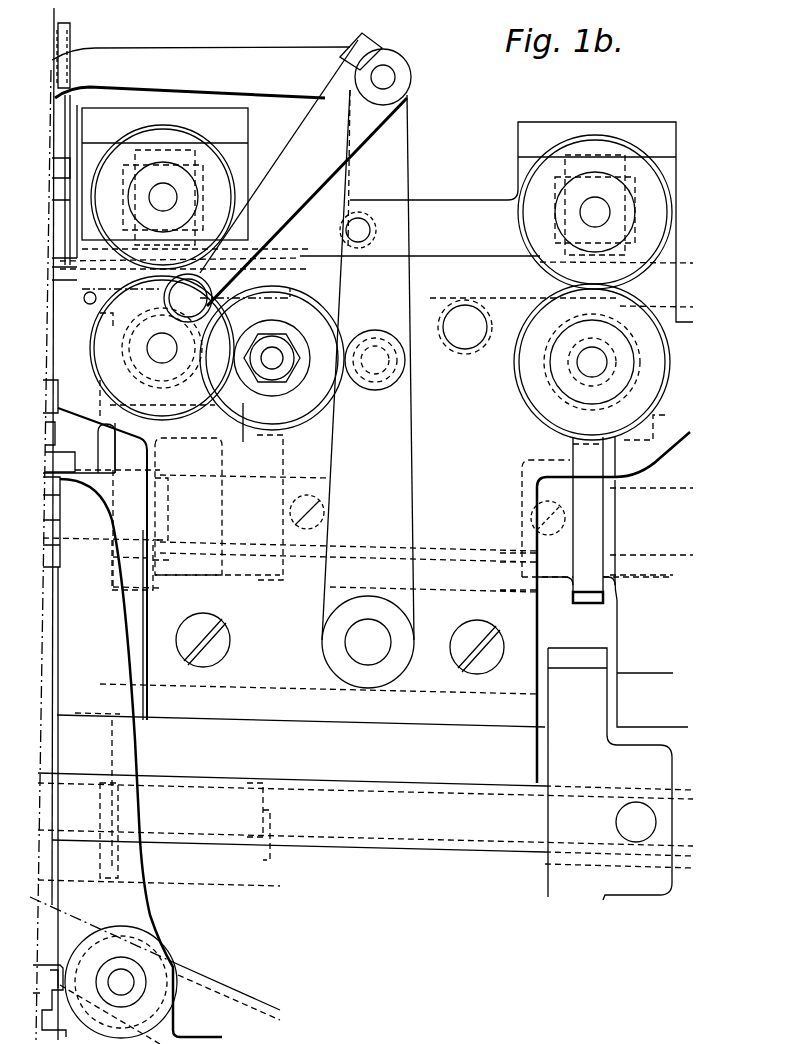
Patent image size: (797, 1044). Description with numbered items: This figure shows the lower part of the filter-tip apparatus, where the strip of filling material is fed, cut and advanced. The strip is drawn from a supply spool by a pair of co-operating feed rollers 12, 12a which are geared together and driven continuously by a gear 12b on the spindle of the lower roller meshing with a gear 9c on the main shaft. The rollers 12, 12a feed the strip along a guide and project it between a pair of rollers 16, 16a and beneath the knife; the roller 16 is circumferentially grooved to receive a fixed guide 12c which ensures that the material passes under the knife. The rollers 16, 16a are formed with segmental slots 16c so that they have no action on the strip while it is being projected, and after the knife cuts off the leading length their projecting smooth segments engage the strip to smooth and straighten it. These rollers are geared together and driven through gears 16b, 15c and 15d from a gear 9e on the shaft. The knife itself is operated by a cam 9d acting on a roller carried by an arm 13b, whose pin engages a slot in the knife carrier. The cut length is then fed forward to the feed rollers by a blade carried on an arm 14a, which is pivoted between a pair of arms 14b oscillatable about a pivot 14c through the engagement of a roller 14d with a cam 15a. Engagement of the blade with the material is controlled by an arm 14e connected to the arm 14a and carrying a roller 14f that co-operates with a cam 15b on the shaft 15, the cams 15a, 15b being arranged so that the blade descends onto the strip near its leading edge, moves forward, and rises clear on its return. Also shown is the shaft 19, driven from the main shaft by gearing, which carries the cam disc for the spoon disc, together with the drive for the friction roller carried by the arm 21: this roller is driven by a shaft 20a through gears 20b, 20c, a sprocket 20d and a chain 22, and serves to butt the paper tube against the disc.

The gear 9c is at (578, 605).
The cam 9d is at (150, 585).
The gear 9e is at (258, 585).
The feed roller 12 is at (560, 180).
The feed roller 12a is at (535, 370).
The gear 12b is at (512, 214).
The fixed guide 12c is at (338, 230).
The arm 13b is at (78, 395).
The arm 14a is at (148, 60).
The arms 14b is at (370, 165).
The pivot 14c is at (352, 652).
The roller 14d is at (405, 372).
The arm 14e is at (360, 115).
The roller 14f is at (170, 345).
The shaft 15 is at (275, 355).
The cam 15a is at (332, 398).
The cam 15b is at (254, 491).
The gear 15c is at (285, 395).
The gear 15d is at (290, 288).
The roller 16 is at (222, 173).
The roller 16a is at (190, 403).
The gear 16b is at (160, 420).
The segmental slots 16c is at (183, 137).
The shaft 19 is at (390, 825).
The shaft 20a is at (44, 678).
The gear 20b is at (40, 980).
The gear 20c is at (163, 938).
The sprocket 20d is at (140, 945).
The arm 21 is at (110, 753).
The chain 22 is at (236, 990).